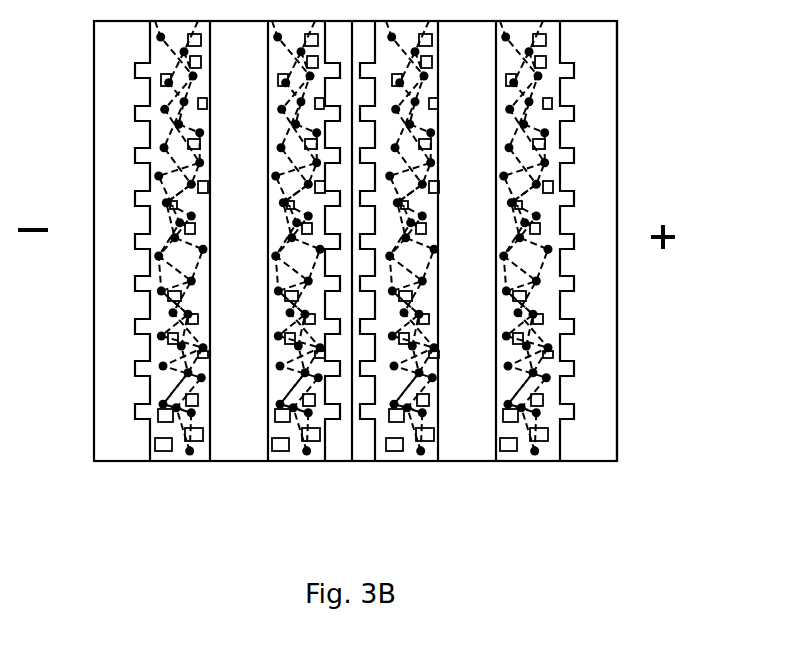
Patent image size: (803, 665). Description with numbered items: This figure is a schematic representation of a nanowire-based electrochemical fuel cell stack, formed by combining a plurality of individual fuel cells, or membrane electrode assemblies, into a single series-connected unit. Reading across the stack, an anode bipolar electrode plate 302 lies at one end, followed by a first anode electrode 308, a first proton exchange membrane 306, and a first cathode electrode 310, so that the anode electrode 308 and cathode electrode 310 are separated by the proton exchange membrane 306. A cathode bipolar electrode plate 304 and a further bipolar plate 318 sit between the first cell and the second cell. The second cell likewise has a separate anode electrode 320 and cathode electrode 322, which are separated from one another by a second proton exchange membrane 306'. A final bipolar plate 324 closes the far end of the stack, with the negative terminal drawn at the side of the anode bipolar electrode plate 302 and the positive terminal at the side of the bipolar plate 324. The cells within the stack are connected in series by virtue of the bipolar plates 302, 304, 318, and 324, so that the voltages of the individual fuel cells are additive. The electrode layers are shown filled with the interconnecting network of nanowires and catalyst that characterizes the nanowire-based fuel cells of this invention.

The anode bipolar electrode plate 302 is at (105, 455).
The anode electrode 308 is at (152, 455).
The proton exchange membrane 306 is at (227, 284).
The cathode electrode 310 is at (272, 455).
The cathode bipolar electrode plate 304 is at (338, 450).
The bipolar plate 318 is at (365, 450).
The cathode electrode 322 is at (427, 463).
The proton exchange membrane 306' is at (510, 261).
The anode electrode 320 is at (548, 460).
The bipolar plate 324 is at (607, 438).